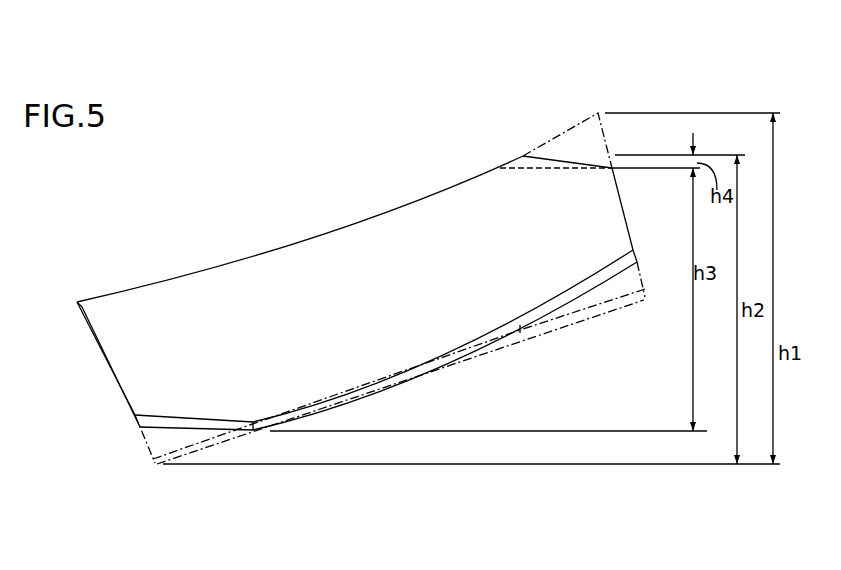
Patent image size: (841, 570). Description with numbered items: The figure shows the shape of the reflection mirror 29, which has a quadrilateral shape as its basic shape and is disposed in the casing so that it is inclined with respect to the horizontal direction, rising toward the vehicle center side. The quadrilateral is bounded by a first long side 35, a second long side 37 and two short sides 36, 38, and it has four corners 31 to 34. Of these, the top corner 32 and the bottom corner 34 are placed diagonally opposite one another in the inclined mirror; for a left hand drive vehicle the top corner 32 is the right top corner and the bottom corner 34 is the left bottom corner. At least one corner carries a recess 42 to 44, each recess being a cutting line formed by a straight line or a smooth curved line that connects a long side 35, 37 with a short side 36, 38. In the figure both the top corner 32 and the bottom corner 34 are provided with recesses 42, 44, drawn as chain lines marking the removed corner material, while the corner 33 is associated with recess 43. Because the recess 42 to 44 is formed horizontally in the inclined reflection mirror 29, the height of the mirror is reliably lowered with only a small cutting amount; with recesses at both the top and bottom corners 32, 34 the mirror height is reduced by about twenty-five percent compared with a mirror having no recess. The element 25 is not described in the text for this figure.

The display panel 25 is at (353, 278).
The reflection mirror 29 is at (303, 224).
The corner 31 is at (66, 292).
The top corner 32 is at (551, 107).
The corner 33 is at (587, 325).
The bottom corner 34 is at (351, 419).
The first long side 35 is at (163, 280).
The short side 36 is at (627, 214).
The second long side 37 is at (472, 362).
The short side 38 is at (110, 373).
The recess 42 is at (579, 106).
The recess 43 is at (621, 327).
The recess 44 is at (140, 470).